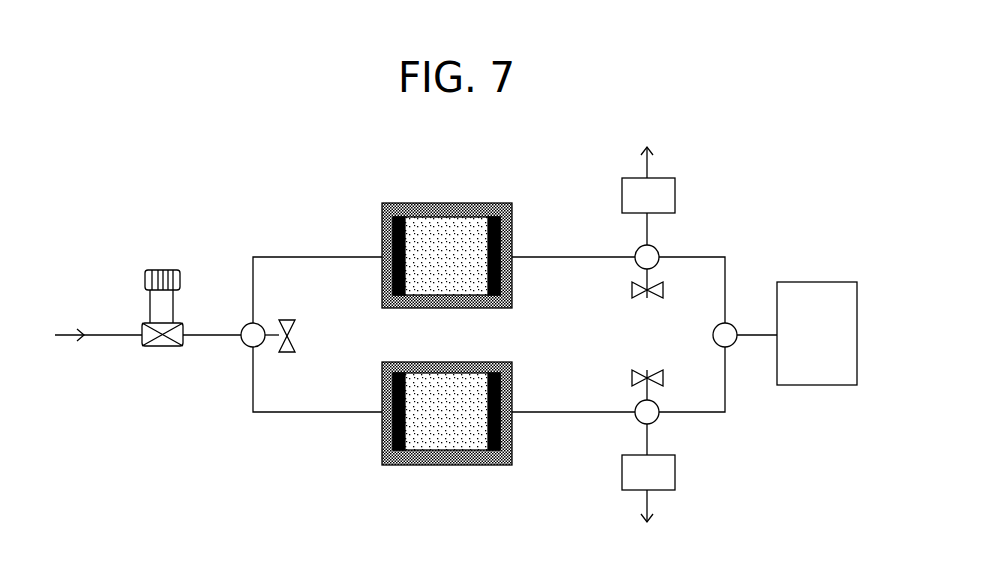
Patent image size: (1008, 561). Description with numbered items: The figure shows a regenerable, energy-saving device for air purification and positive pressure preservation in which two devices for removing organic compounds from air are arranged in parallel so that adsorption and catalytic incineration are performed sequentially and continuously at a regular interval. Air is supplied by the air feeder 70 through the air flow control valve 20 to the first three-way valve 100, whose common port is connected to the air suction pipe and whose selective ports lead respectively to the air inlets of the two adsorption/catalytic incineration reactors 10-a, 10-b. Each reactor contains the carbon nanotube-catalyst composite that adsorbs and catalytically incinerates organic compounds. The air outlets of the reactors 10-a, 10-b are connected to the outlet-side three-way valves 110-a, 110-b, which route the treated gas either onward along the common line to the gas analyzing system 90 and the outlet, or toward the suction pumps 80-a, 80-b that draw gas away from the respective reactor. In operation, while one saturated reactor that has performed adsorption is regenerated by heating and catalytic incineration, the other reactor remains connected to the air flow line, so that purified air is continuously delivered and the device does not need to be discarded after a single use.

The adsorption/catalytic incineration reactor 10-a is at (430, 197).
The adsorption/catalytic incineration reactor 10-b is at (430, 493).
The air flow control valve 20 is at (162, 302).
The air feeder 70 is at (108, 337).
The suction pump 80-a is at (645, 200).
The suction pump 80-b is at (648, 473).
The gas analyzing system 90 is at (792, 300).
The 3-way valve (common port) 100 is at (271, 330).
The 3-way valve (outlet) 110-a is at (640, 270).
The 3-way valve (outlet) 110-b is at (642, 400).